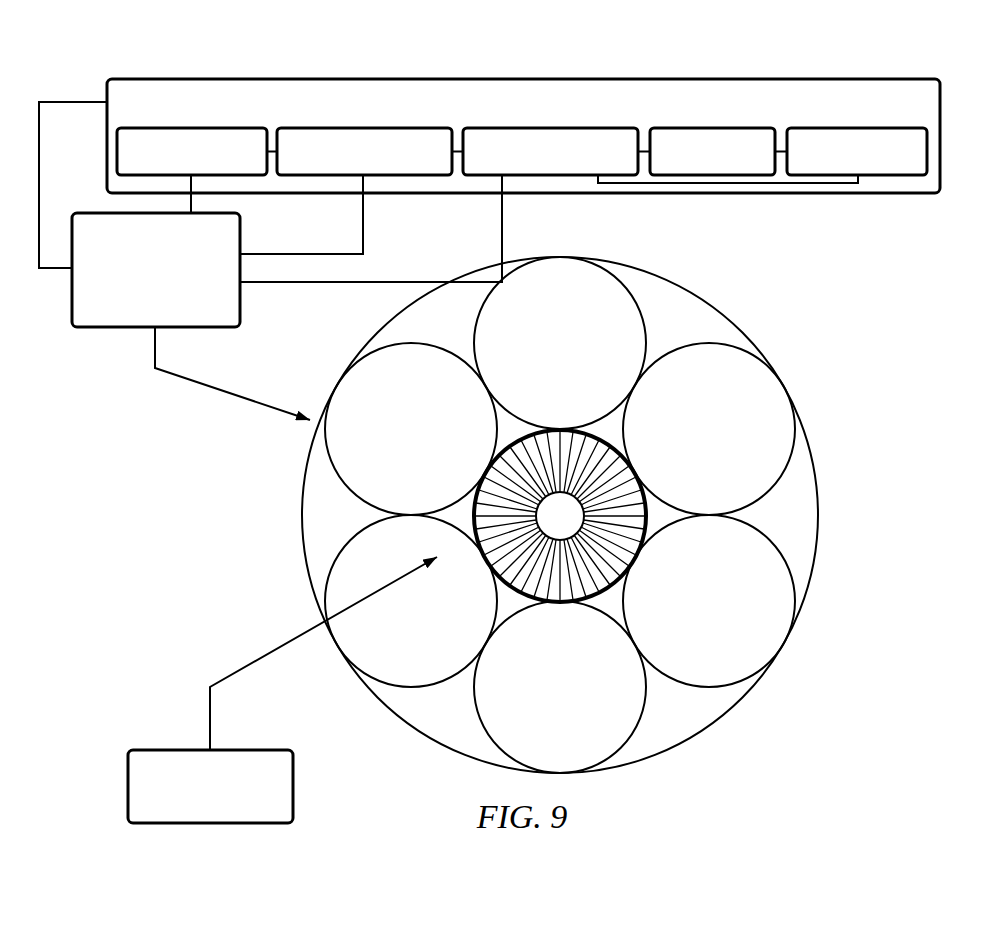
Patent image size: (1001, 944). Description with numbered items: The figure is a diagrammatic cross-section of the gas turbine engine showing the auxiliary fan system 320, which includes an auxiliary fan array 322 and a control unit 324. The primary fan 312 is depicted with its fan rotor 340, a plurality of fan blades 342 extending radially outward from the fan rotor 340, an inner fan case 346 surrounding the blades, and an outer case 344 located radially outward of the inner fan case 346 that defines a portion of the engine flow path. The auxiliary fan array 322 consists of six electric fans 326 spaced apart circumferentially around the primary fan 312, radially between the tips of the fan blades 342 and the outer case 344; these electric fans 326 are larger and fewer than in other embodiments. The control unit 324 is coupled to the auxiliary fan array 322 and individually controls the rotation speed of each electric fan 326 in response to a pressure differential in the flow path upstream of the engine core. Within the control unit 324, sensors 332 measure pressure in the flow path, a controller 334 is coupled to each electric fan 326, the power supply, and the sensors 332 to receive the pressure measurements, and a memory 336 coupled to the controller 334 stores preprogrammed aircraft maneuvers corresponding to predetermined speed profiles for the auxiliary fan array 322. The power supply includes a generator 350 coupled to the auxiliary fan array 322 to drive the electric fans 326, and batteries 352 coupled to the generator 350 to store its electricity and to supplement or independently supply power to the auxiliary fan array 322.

The primary fan 312 is at (128, 765).
The auxiliary fan system 320 is at (152, 68).
The auxiliary fan array 322 is at (107, 330).
The control unit 324 is at (210, 78).
The electric fan 326 is at (523, 275).
The sensors 332 is at (858, 128).
The controller 334 is at (618, 128).
The memory 336 is at (708, 128).
The fan rotor 340 is at (594, 498).
The fan blades 342 is at (495, 583).
The outer case 344 is at (302, 538).
The inner fan case 346 is at (530, 582).
The generator 350 is at (402, 128).
The batteries 352 is at (203, 128).